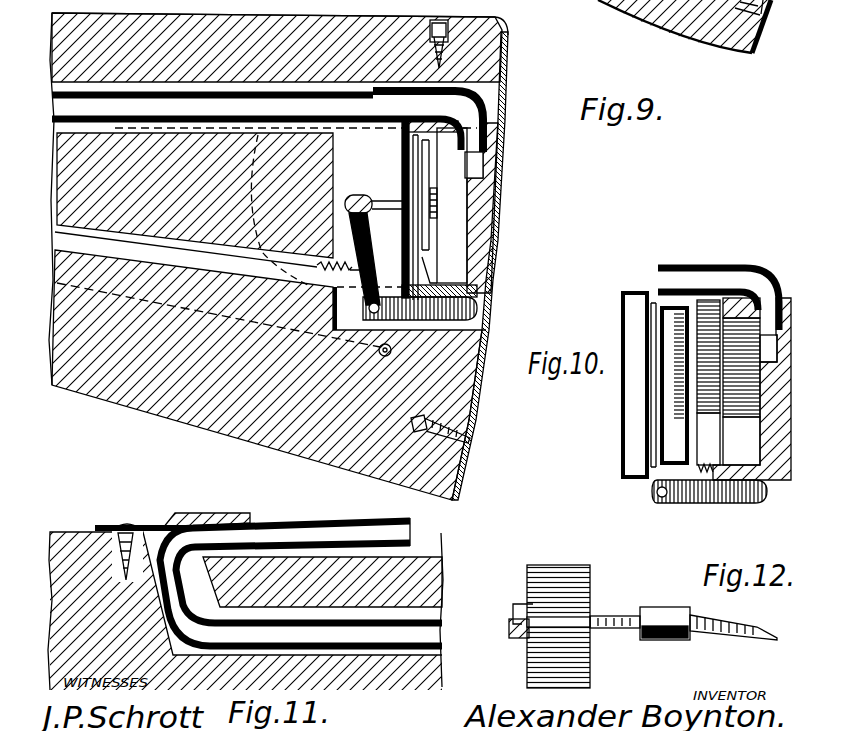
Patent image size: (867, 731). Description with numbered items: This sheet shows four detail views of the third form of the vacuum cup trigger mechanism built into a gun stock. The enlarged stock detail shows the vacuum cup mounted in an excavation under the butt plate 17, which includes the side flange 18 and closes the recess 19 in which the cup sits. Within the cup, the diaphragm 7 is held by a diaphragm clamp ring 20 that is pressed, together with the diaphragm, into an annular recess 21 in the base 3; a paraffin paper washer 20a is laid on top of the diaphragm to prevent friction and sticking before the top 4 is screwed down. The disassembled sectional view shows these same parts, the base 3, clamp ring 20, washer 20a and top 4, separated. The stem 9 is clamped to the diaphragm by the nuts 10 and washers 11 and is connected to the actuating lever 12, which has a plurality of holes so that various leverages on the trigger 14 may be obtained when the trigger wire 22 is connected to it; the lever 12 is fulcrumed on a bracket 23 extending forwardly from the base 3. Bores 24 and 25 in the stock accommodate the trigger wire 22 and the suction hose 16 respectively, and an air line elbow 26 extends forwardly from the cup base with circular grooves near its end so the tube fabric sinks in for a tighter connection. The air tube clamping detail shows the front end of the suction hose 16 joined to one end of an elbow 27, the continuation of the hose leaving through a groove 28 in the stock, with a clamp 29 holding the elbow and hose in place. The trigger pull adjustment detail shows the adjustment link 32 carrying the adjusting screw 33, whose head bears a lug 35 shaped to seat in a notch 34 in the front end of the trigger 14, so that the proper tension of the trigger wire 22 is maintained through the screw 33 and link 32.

In FIG. 9, the base 3 is at (495, 238).
In FIG. 10, the base 3 is at (777, 433).
In FIG. 9, the top 4 is at (403, 145).
In FIG. 10, the top 4 is at (624, 437).
In FIG. 9, the diaphragm 7 is at (416, 166).
In FIG. 9, the stem 9 is at (385, 208).
In FIG. 9, the nuts 10 is at (427, 201).
In FIG. 9, the washers 11 is at (425, 228).
In FIG. 9, the actuating lever 12 is at (380, 230).
In FIG. 12, the trigger 14 is at (588, 658).
In FIG. 9, the suction hose 16 is at (324, 88).
In FIG. 11, the suction hose 16 is at (285, 525).
In FIG. 9, the butt plate 17 is at (488, 338).
In FIG. 9, the side flange 18 is at (256, 162).
In FIG. 9, the recess 19 is at (497, 90).
In FIG. 9, the diaphragm clamp ring 20 is at (412, 282).
In FIG. 10, the diaphragm clamp ring 20 is at (668, 465).
In FIG. 10, the paraffin paper washer 20a is at (652, 447).
In FIG. 9, the annular recess 21 is at (439, 291).
In FIG. 10, the annular recess 21 is at (707, 460).
In FIG. 9, the trigger wire 22 is at (62, 233).
In FIG. 9, the bracket 23 is at (483, 303).
In FIG. 10, the bracket 23 is at (747, 484).
In FIG. 9, the bore 24 is at (62, 262).
In FIG. 9, the bore 25 is at (200, 84).
In FIG. 11, the bore 25 is at (415, 600).
In FIG. 9, the air line elbow 26 is at (480, 111).
In FIG. 10, the air line elbow 26 is at (753, 255).
In FIG. 11, the elbow 27 is at (182, 522).
In FIG. 11, the groove 28 is at (423, 547).
In FIG. 11, the clamp 29 is at (238, 519).
In FIG. 12, the adjustment link 32 is at (690, 605).
In FIG. 12, the adjusting screw 33 is at (627, 609).
In FIG. 12, the notch 34 is at (533, 606).
In FIG. 12, the lug 35 is at (522, 640).